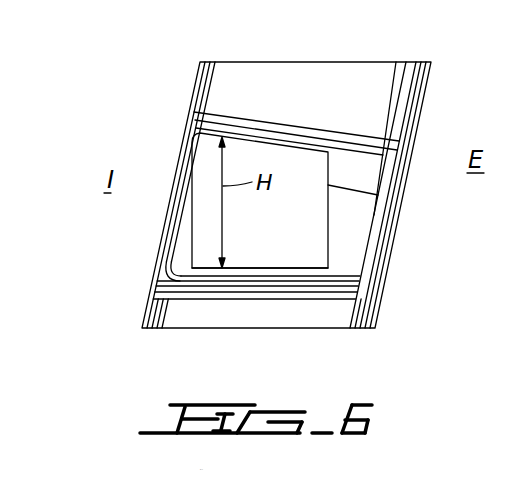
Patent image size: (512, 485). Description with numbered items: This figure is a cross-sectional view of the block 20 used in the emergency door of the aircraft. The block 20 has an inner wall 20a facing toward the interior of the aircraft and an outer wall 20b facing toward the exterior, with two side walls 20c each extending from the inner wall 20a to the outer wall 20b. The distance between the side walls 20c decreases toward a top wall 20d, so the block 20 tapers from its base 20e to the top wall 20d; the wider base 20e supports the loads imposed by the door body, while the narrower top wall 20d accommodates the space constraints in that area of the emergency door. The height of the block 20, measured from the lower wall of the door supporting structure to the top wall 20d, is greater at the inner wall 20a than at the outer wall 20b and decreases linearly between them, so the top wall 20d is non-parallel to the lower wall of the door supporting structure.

The block 20 is at (185, 168).
The inner wall 20a is at (193, 232).
The outer wall 20b is at (330, 223).
The side wall 20c is at (292, 247).
The top wall 20d is at (272, 142).
The base 20e is at (305, 276).